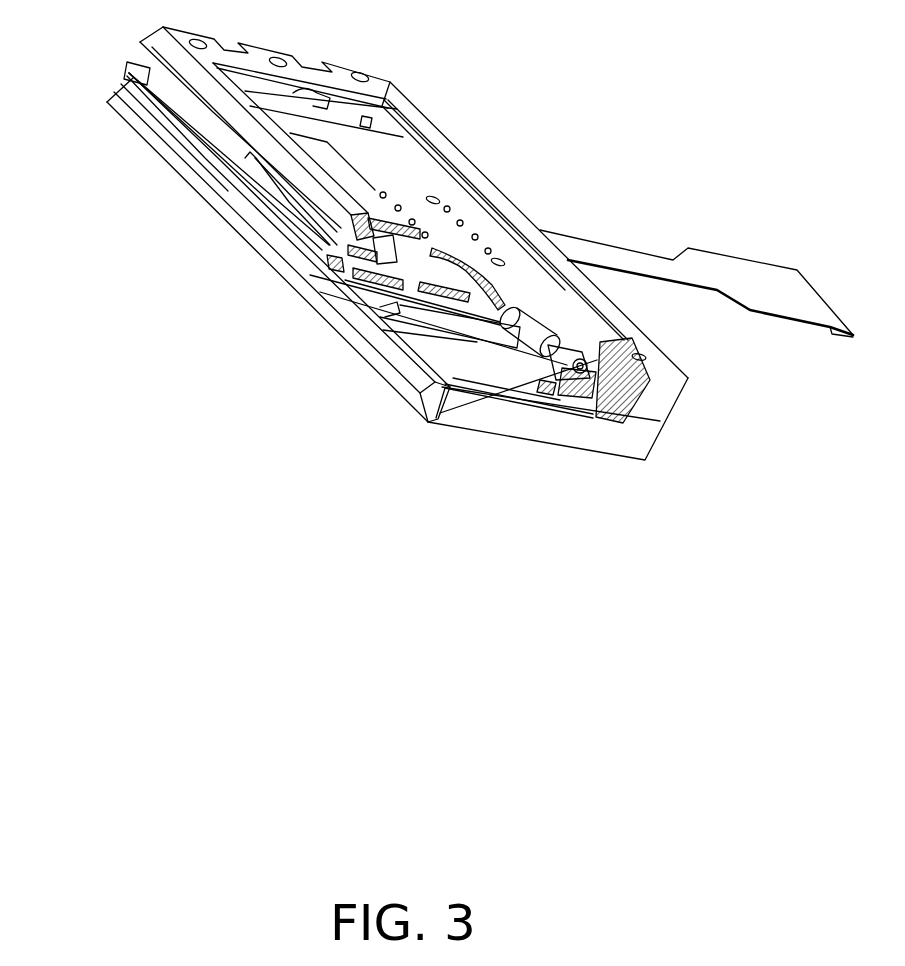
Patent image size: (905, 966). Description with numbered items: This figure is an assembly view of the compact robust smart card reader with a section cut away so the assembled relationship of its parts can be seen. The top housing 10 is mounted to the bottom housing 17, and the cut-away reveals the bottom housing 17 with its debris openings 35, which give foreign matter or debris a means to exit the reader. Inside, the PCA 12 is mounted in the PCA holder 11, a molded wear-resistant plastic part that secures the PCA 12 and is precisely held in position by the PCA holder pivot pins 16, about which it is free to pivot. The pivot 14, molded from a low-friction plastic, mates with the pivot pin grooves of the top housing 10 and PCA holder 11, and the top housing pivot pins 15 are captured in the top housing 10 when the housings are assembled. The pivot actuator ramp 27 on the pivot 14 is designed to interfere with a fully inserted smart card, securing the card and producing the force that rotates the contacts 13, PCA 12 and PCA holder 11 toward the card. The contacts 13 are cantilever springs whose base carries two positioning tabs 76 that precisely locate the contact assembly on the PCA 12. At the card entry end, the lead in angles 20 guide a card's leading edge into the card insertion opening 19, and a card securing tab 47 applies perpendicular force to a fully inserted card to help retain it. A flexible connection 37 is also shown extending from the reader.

The top housing 10 is at (397, 83).
The PCA holder 11 is at (397, 118).
The PCA 12 is at (415, 178).
The contacts 13 is at (417, 285).
The pivot 14 is at (543, 333).
The top housing pivot pins 15 is at (603, 343).
The PCA holder pivot pins 16 is at (468, 316).
The bottom housing 17 is at (557, 430).
The card insertion opening 19 is at (160, 110).
The lead in angles 20 is at (157, 97).
The pivot actuator ramp 27 is at (545, 343).
The debris openings 35 is at (395, 328).
The flex cable 37 is at (762, 283).
The card securing tab 47 is at (483, 393).
The positioning tabs 76 is at (437, 198).